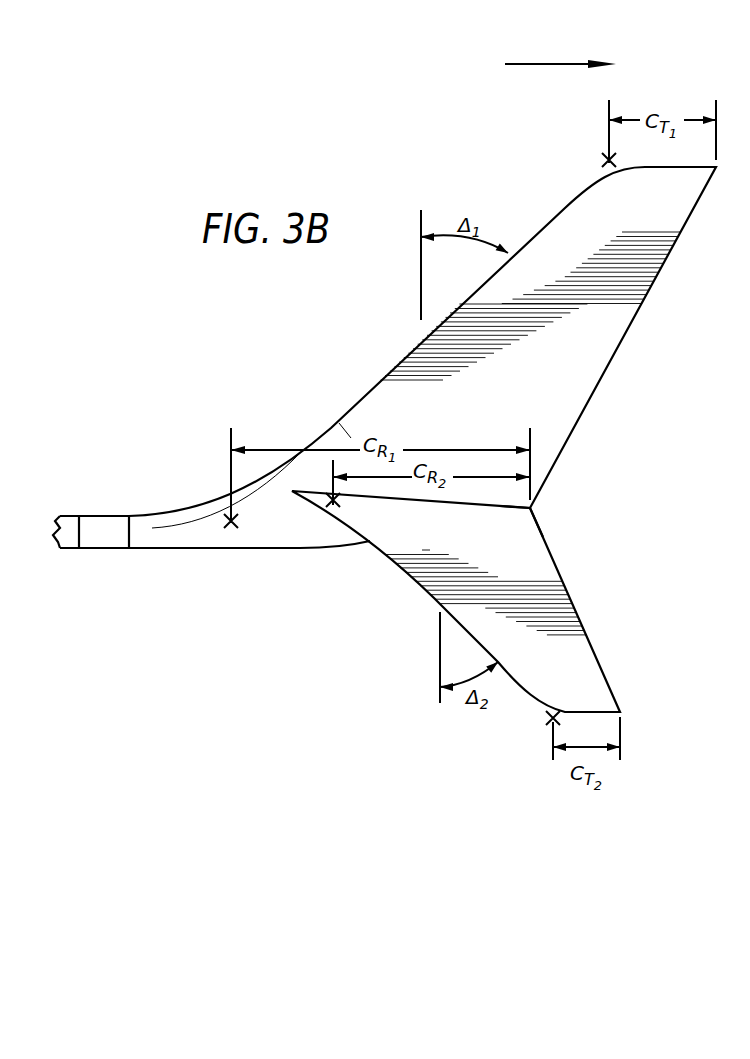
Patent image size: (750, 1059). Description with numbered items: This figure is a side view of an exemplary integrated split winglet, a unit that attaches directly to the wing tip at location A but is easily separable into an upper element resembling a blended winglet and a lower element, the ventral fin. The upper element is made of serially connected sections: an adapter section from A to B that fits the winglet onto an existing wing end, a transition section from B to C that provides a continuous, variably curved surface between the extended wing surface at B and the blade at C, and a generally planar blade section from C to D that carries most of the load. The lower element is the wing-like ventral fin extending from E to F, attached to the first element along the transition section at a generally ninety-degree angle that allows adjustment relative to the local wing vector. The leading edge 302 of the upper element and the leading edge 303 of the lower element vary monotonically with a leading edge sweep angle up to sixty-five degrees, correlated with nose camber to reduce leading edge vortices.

The leading edge curve of the upper element 302 is at (433, 337).
The leading edge curve of the lower element 303 is at (465, 609).
The wing tip attachment location A is at (79, 518).
The end of adapter section B is at (129, 518).
The start of blade section C is at (333, 422).
The blade section tip D is at (691, 170).
The ventral fin root E is at (526, 519).
The ventral fin tip F is at (602, 716).